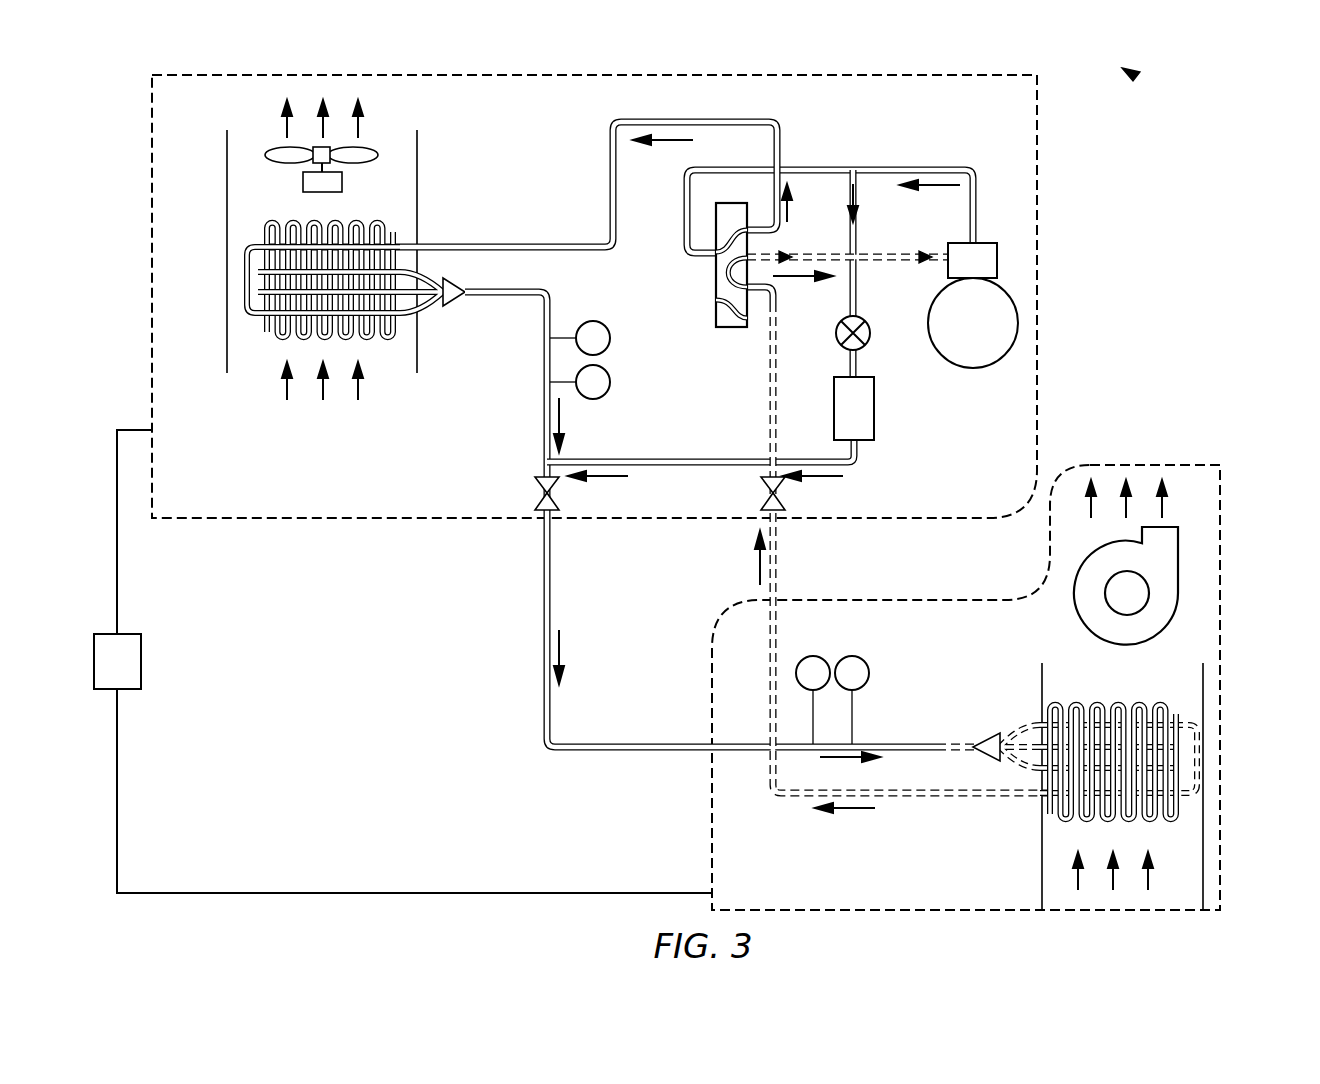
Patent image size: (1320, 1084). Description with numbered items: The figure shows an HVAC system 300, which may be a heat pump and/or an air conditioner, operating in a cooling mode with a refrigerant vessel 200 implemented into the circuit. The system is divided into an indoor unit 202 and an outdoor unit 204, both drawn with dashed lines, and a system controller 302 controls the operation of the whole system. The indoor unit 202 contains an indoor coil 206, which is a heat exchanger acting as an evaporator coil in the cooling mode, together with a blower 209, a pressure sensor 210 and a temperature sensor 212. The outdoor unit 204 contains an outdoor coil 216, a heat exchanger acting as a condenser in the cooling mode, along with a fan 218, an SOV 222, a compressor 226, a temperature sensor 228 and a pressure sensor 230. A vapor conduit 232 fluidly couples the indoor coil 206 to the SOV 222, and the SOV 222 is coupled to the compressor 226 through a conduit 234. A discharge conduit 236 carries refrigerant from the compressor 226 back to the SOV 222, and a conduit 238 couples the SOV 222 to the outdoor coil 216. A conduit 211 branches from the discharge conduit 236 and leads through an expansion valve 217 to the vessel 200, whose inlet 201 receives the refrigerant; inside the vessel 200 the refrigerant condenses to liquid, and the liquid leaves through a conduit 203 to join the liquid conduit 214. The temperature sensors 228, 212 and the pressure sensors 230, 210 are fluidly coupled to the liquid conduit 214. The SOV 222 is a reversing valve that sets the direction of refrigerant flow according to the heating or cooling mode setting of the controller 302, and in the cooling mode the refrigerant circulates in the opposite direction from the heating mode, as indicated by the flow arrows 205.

The refrigerant vessel 200 is at (854, 408).
The inlet 201 is at (862, 376).
The indoor unit 202 is at (1222, 868).
The conduit 203 is at (655, 466).
The outdoor unit 204 is at (848, 75).
The arrows 205 is at (922, 250).
The indoor coil 206 is at (1197, 735).
The blower 209 is at (1178, 575).
The pressure sensor 210 is at (822, 657).
The conduit 211 is at (858, 288).
The temperature sensor 212 is at (862, 657).
The liquid conduit 214 is at (543, 603).
The outdoor coil 216 is at (247, 258).
The expansion valve 217 is at (840, 348).
The fan 218 is at (342, 183).
The SOV 222 is at (716, 272).
The compressor 226 is at (973, 322).
The temperature sensor 228 is at (612, 338).
The pressure sensor 230 is at (612, 382).
The vapor conduit 232 is at (770, 428).
The conduit 234 is at (882, 250).
The discharge conduit 236 is at (967, 170).
The conduit 238 is at (650, 118).
The HVAC system 300 is at (1138, 76).
The system controller 302 is at (403, 661).